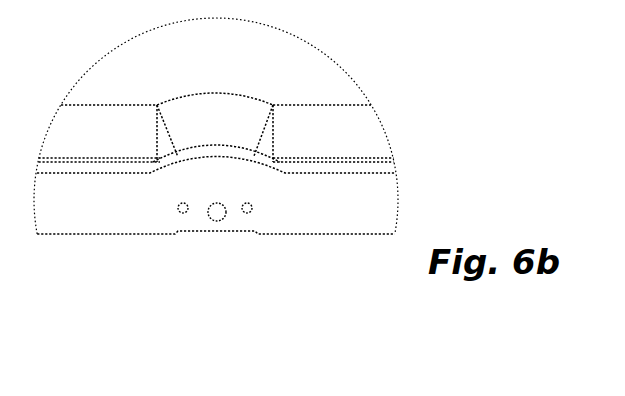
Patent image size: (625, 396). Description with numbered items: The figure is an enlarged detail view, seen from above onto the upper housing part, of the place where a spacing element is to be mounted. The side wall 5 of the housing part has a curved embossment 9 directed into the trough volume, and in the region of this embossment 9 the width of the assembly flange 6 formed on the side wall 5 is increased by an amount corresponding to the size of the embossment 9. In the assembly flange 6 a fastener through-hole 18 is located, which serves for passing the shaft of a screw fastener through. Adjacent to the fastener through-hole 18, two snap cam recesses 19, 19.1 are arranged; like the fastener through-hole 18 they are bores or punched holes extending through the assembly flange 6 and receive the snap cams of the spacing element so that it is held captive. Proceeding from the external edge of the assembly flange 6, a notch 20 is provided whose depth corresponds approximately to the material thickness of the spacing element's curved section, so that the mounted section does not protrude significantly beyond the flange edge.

The side wall 5 is at (216, 133).
The assembly flange 6 is at (202, 211).
The curved embossment 9 is at (218, 101).
The fastener through-hole 18 is at (209, 216).
The snap cam recess 19 is at (179, 210).
The snap cam recess 19.1 is at (254, 209).
The notch 20 is at (245, 236).